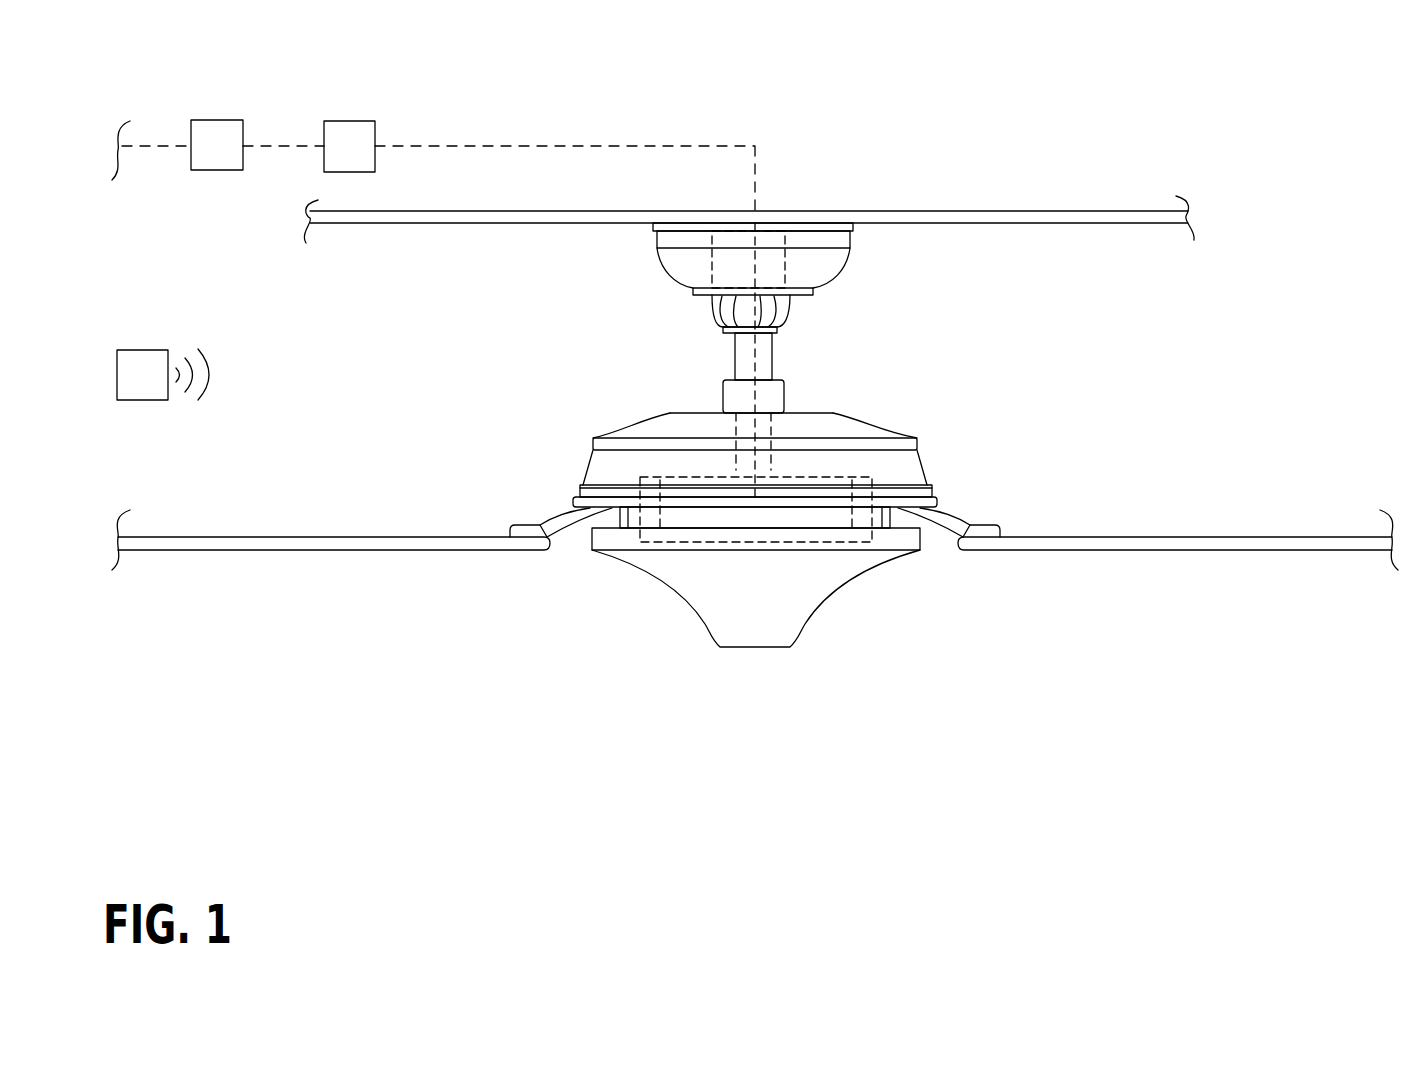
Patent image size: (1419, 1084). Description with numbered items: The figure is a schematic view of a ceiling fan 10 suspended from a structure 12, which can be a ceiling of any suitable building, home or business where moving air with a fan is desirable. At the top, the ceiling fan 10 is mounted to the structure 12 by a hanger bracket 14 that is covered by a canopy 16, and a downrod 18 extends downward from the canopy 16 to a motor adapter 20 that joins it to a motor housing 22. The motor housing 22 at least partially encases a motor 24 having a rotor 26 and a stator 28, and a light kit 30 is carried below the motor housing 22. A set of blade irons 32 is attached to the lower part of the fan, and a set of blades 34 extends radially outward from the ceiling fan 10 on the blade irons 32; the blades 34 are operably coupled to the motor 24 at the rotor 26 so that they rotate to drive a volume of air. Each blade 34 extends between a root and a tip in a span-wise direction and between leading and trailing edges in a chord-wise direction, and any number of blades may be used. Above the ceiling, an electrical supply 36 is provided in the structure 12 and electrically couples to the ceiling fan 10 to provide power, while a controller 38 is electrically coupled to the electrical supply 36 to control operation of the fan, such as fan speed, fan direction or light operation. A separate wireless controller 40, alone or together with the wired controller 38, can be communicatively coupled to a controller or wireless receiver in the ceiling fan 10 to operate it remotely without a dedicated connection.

The ceiling fan 10 is at (1322, 128).
The structure 12 is at (1090, 211).
The hanger bracket 14 is at (785, 259).
The canopy 16 is at (670, 263).
The downrod 18 is at (733, 353).
The motor adapter 20 is at (722, 397).
The motor housing 22 is at (880, 428).
The motor 24 is at (808, 545).
The rotor 26 is at (862, 513).
The stator 28 is at (682, 518).
The light kit 30 is at (760, 627).
The blade irons 32 is at (537, 532).
The blades 34 is at (213, 543).
The electrical supply 36 is at (362, 120).
The controller 38 is at (222, 118).
The wireless controller 40 is at (148, 350).